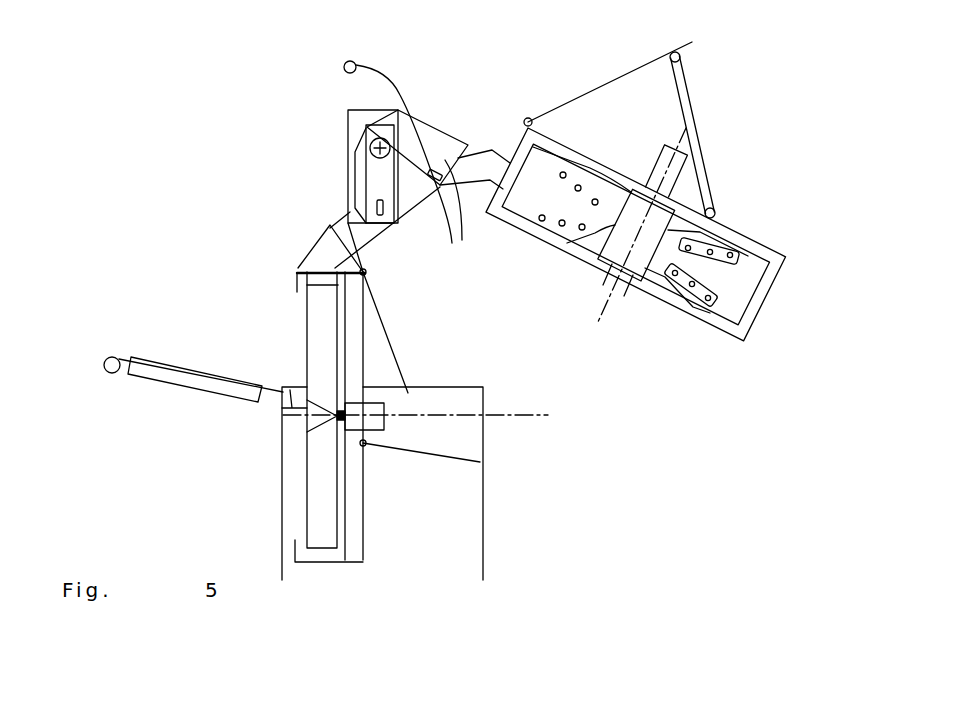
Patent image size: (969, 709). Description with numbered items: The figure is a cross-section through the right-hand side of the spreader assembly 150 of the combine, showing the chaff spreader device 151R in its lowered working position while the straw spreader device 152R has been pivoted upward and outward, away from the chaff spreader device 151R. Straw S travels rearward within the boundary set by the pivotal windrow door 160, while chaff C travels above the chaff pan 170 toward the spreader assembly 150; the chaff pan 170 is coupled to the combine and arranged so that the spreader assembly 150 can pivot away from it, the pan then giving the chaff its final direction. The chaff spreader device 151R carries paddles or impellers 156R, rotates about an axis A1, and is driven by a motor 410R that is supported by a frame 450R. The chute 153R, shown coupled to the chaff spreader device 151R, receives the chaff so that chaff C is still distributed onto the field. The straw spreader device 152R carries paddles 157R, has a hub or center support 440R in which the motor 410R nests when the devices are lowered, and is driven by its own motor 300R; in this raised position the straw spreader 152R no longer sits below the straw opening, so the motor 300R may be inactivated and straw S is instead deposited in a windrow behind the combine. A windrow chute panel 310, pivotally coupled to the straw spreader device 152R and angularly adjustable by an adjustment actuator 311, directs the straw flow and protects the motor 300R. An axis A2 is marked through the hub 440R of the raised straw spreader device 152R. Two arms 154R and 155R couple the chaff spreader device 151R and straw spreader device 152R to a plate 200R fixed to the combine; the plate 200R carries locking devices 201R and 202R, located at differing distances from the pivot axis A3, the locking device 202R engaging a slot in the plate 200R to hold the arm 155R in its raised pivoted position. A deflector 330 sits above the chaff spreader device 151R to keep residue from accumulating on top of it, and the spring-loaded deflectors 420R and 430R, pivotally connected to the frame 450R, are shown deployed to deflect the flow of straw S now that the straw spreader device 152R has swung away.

The spreader assembly 150 is at (750, 106).
The chaff spreader device 151R is at (326, 574).
The straw spreader device 152R is at (772, 315).
The chute 153R is at (282, 505).
The arm 154R is at (345, 222).
The arm 155R is at (485, 150).
The paddles 156R is at (306, 344).
The paddles 157R is at (737, 250).
The windrow door 160 is at (390, 83).
The chaff pan 170 is at (205, 393).
The plate 200R is at (437, 125).
The locking device 201R is at (462, 240).
The locking device 202R is at (348, 171).
The motor 300R is at (666, 144).
The windrow chute panel 310 is at (633, 70).
The adjustment actuator 311 is at (691, 89).
The deflector 330 is at (327, 230).
The motor 410R is at (385, 425).
The deflector 420R is at (397, 361).
The deflector 430R is at (407, 451).
The hub or center support 440R is at (603, 271).
The frame 450R is at (338, 323).
The axis A1 is at (517, 414).
The second axis A2 is at (605, 303).
The axis A3 is at (378, 200).
The straw S is at (322, 132).
The chaff C is at (150, 317).